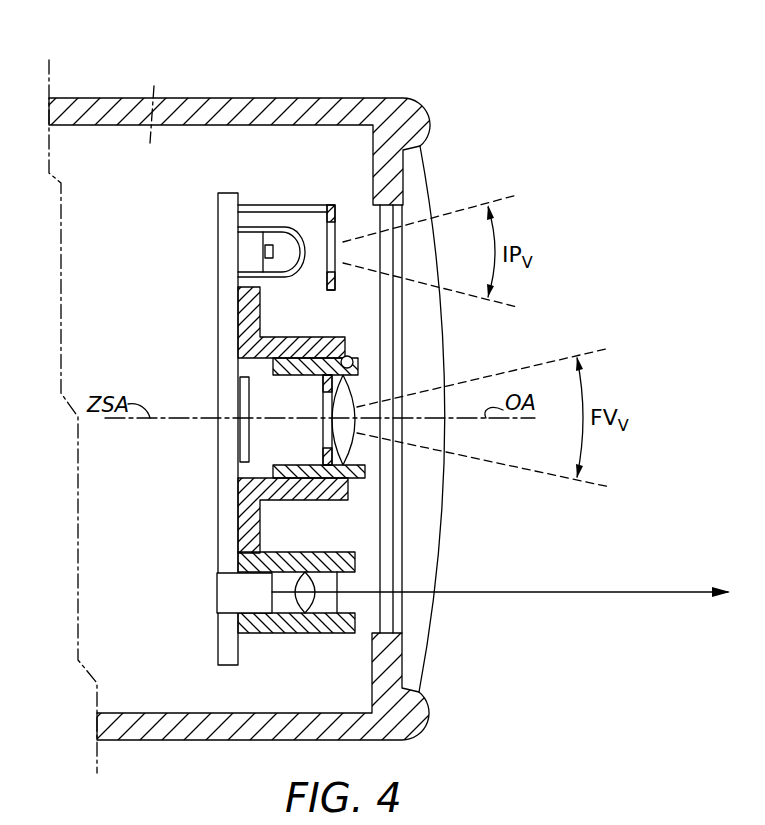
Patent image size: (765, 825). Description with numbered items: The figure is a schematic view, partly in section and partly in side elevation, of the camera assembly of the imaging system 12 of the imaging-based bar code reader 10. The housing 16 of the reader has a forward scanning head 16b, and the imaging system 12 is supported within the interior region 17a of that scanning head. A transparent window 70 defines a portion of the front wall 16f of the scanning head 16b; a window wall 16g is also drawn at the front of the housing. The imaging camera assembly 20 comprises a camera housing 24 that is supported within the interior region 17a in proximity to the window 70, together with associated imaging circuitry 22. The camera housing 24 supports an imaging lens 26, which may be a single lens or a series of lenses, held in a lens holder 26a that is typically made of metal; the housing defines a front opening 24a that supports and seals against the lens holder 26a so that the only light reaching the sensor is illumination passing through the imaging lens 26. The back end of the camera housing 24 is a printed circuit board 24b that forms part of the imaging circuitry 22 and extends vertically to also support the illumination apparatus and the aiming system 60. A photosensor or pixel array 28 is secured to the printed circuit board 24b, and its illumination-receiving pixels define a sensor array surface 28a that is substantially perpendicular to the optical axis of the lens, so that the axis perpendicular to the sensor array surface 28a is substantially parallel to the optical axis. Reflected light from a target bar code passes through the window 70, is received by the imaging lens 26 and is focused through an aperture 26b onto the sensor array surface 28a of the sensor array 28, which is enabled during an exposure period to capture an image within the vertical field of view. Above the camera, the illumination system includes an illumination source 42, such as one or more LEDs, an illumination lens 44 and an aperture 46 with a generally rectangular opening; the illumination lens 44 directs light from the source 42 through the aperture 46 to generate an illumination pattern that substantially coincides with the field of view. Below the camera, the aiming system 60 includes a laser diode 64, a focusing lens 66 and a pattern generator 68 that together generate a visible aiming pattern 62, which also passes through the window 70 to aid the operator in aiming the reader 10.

The bar code reader 10 is at (105, 60).
The imaging system 12 is at (80, 372).
The housing 16 is at (272, 389).
The scanning head portion 16b is at (226, 97).
The front wall 16f is at (430, 118).
The window / light-transmissive wall 16g is at (432, 537).
The interior region 17a is at (155, 103).
The imaging camera assembly 20 is at (313, 410).
The imaging circuitry 22 is at (208, 378).
The camera housing 24 is at (281, 360).
The front opening 24a is at (345, 364).
The printed circuit board 24b is at (225, 500).
The imaging lens 26 is at (355, 445).
The lens holder 26a is at (357, 480).
The aperture 26b is at (325, 452).
The sensor array 28 is at (240, 438).
The sensor array surface 28a is at (250, 398).
The illumination source 42 is at (270, 245).
The illumination lens 44 is at (297, 240).
The aperture 46 is at (331, 212).
The aiming system 60 is at (251, 591).
The aiming pattern 62 is at (650, 595).
The laser diode 64 is at (228, 583).
The focusing lens 66 is at (307, 562).
The pattern generator 68 is at (343, 605).
The transparent window 70 is at (385, 568).